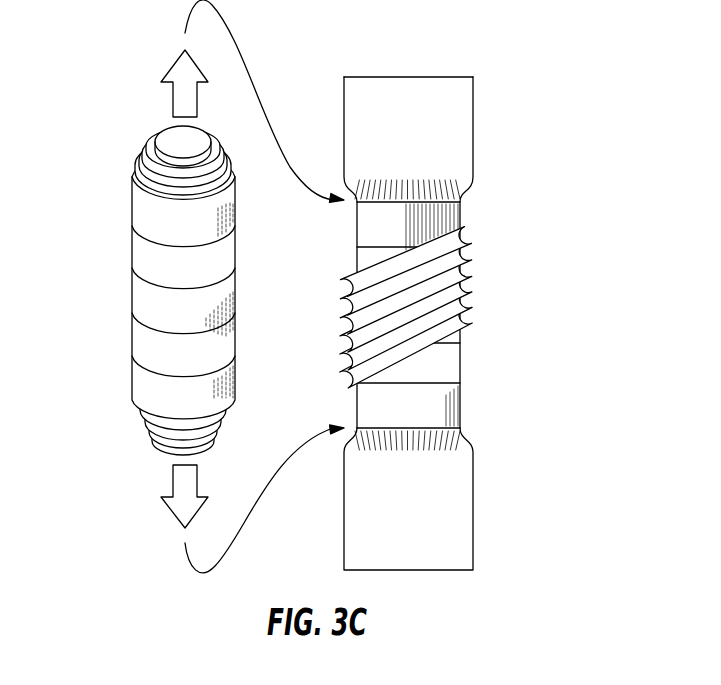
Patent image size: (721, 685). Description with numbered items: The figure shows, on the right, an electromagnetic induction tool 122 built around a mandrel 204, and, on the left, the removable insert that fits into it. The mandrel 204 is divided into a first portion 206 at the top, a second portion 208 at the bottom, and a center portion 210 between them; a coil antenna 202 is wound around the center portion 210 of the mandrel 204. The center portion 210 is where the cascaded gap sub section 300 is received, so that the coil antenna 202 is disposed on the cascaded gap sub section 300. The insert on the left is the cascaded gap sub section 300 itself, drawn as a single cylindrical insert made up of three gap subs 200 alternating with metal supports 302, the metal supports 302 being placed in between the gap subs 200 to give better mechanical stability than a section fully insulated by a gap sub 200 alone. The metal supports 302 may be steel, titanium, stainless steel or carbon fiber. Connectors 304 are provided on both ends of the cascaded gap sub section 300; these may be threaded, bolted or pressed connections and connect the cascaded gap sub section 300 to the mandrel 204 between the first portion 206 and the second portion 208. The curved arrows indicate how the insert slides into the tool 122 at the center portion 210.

The electromagnetic induction tool 122 is at (362, 34).
The gap sub 200 is at (132, 210).
The coil antenna 202 is at (466, 297).
The mandrel 204 is at (478, 66).
The first portion 206 is at (468, 125).
The second portion 208 is at (348, 538).
The center portion 210 is at (339, 243).
The cascaded gap sub section 300 is at (112, 146).
The metal support 302 is at (132, 250).
The connector 304 is at (163, 137).